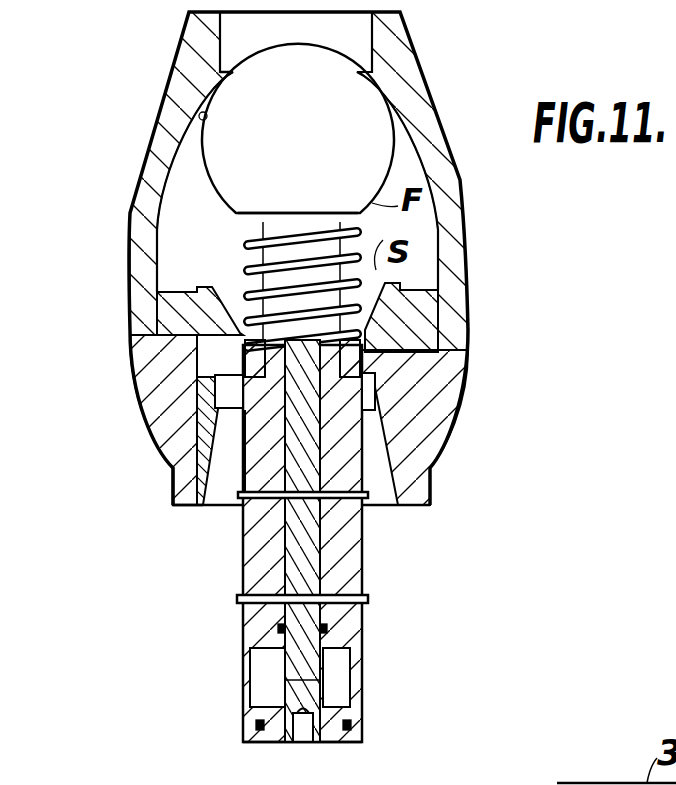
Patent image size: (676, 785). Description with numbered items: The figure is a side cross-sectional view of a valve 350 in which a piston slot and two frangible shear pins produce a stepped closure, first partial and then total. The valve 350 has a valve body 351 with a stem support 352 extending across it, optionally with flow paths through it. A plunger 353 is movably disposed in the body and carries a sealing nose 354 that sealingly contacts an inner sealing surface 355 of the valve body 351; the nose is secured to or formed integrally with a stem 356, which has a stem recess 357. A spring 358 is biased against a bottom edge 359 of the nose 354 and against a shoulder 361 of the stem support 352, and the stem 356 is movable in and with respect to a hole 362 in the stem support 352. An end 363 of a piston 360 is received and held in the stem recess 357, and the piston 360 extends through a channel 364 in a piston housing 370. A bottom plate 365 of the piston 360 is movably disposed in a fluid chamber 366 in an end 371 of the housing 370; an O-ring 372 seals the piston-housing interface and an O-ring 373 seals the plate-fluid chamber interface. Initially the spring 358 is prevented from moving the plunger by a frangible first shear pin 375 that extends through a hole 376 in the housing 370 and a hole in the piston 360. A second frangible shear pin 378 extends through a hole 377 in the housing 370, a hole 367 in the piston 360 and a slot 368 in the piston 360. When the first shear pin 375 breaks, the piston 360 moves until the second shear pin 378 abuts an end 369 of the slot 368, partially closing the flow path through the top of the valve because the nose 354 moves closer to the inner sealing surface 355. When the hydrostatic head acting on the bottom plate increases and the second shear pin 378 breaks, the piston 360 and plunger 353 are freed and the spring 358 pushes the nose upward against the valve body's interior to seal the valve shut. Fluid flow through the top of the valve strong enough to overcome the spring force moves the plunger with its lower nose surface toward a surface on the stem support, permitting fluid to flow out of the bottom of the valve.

The valve 350 is at (435, 89).
The valve body 351 is at (450, 192).
The stem support 352 is at (436, 276).
The plunger 353 is at (207, 190).
The sealing nose 354 is at (215, 93).
The inner sealing surface 355 is at (199, 118).
The stem 356 is at (240, 253).
The stem recess 357 is at (258, 387).
The spring 358 is at (358, 225).
The bottom edge 359 is at (240, 233).
The piston 360 is at (297, 680).
The shoulder 361 is at (368, 346).
The hole 362 is at (240, 325).
The end 363 is at (372, 393).
The channel 364 is at (307, 550).
The bottom plate 365 is at (340, 700).
The fluid chamber 366 is at (343, 673).
The hole 367 is at (368, 485).
The slot 368 is at (310, 507).
The end 369 is at (277, 523).
The piston housing 370 is at (350, 625).
The end 371 is at (250, 687).
The O-ring 372 is at (280, 625).
The O-ring 373 is at (347, 743).
The first shear pin 375 is at (238, 600).
The hole 376 is at (263, 590).
The hole 377 is at (280, 483).
The second shear pin 378 is at (238, 487).